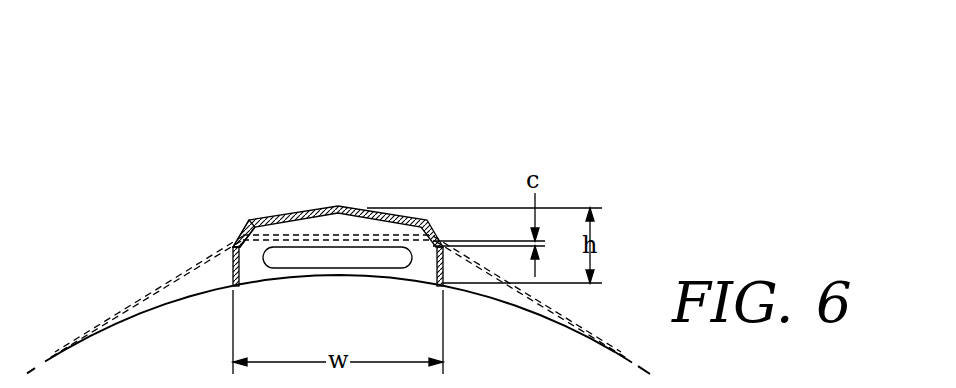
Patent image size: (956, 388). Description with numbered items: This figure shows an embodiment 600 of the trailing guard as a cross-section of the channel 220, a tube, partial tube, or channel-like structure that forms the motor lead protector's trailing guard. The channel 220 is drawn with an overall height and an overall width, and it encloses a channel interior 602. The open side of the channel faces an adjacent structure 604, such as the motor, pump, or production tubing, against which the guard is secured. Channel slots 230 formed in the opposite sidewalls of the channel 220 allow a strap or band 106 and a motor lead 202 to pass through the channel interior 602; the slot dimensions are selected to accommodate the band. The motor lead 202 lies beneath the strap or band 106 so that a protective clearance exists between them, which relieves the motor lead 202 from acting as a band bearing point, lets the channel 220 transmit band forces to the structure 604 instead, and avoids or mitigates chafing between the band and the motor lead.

The trailing guard embodiment 600 is at (198, 203).
The strap or band 106 is at (320, 235).
The motor lead 202 is at (300, 255).
The channel 220 is at (393, 213).
The channel slots 230 is at (238, 229).
The channel interior 602 is at (250, 257).
The adjacent structure 604 is at (200, 292).